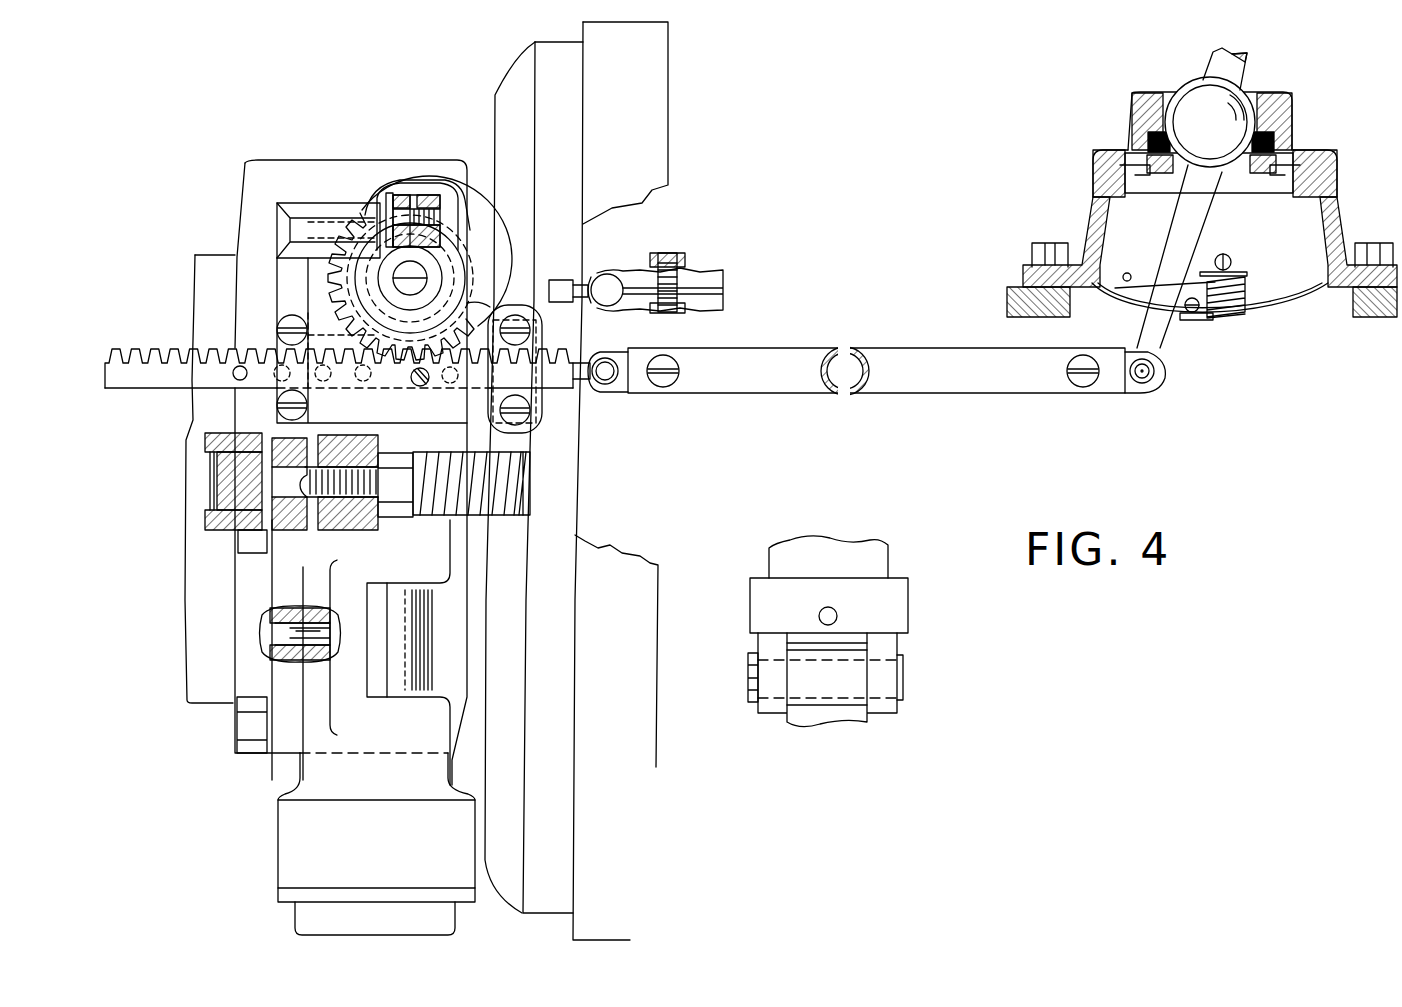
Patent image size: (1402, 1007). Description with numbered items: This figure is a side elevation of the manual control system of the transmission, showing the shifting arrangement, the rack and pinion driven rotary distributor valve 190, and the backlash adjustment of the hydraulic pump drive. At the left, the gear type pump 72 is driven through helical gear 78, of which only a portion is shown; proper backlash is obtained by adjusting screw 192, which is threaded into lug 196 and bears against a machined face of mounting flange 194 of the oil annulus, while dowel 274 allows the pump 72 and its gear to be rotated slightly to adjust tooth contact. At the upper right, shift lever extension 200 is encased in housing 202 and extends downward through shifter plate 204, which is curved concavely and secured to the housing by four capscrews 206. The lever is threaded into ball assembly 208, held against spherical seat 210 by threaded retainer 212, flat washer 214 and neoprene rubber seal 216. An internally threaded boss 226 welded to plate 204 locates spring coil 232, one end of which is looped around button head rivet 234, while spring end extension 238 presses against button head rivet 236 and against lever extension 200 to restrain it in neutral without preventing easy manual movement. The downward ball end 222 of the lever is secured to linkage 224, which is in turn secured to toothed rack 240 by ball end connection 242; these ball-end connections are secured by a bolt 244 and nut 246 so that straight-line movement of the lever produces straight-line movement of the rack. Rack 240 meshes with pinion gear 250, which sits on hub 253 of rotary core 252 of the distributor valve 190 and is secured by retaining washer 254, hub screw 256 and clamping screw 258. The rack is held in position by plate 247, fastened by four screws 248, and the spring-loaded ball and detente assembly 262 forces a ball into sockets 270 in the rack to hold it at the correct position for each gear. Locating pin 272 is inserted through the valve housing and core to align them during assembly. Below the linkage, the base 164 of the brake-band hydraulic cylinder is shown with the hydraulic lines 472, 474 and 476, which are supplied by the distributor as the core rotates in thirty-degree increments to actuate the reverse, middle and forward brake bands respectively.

The gear type pump 72 is at (315, 851).
The helical gear 78 is at (495, 505).
The base of cylinder 164 is at (870, 608).
The rotary distributor valve 190 is at (330, 213).
The adjusting screw 192 is at (243, 482).
The mounting flange 194 is at (290, 527).
The lug 196 is at (347, 517).
The shift lever extension 200 is at (1267, 233).
The housing 202 is at (1288, 98).
The shifter plate 204 is at (1267, 317).
The capscrews 206 is at (1370, 250).
The ball assembly 208 is at (1245, 85).
The spherical seat 210 is at (1140, 95).
The threaded retainer 212 is at (1123, 173).
The flat washer 214 is at (1205, 215).
The neoprene rubber seal 216 is at (1290, 128).
The ball end 222 is at (1142, 385).
The linkage 224 is at (917, 372).
The internally threaded boss 226 is at (1222, 322).
The spring coil 232 is at (1240, 312).
The button head rivet 234 is at (1195, 325).
The button head rivet 236 is at (1148, 258).
The spring end extension 238 is at (1185, 275).
The toothed rack 240 is at (140, 373).
The ball end connection 242 is at (607, 387).
The bolt 244 is at (673, 312).
The nut 246 is at (685, 258).
The plate 247 is at (449, 367).
The screws 248 is at (420, 380).
The pinion gear 250 is at (340, 260).
The rotary core 252 is at (475, 246).
The hub 253 is at (435, 268).
The retaining washer 254 is at (450, 283).
The hub screw 256 is at (393, 280).
The clamping screw 258 is at (410, 200).
The spring-loaded ball and detente assembly 262 is at (513, 418).
The sockets 270 is at (240, 383).
The locating pin 272 is at (280, 323).
The dowel 274 is at (280, 637).
The line 472 is at (827, 620).
The line 474 is at (880, 686).
The line 476 is at (880, 727).